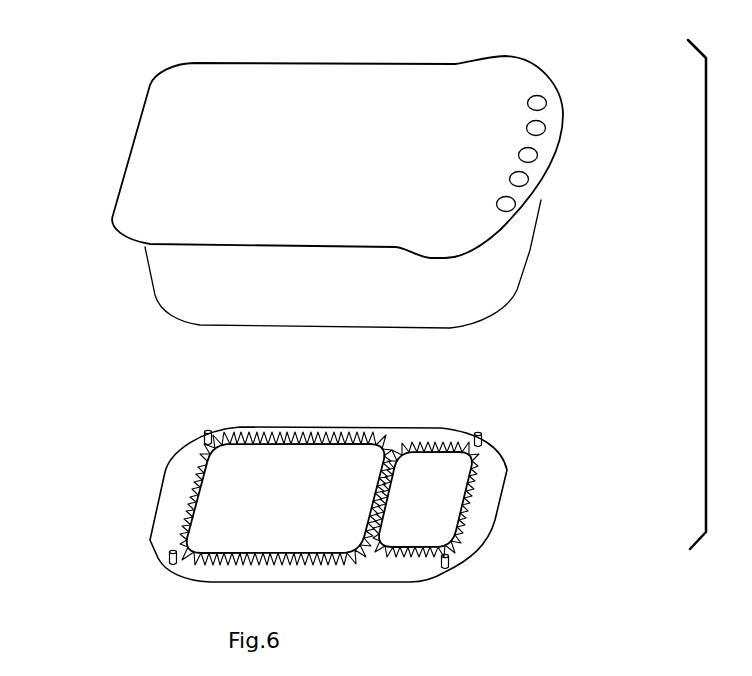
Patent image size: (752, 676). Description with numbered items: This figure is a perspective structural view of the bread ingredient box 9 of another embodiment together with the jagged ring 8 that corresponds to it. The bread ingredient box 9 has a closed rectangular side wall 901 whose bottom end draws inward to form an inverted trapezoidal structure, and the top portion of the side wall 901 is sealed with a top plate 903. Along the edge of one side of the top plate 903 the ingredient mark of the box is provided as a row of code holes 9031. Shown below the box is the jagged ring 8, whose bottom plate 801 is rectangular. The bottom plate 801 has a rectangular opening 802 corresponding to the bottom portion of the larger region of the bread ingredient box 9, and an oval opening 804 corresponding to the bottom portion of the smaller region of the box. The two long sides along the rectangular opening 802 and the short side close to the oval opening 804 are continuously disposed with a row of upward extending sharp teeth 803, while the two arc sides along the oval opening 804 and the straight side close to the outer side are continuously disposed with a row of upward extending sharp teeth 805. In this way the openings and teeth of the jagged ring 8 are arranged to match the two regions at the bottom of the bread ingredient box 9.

The bread ingredient box 9 is at (107, 74).
The side wall 901 is at (531, 253).
The top plate 903 is at (337, 82).
The code holes 9031 is at (538, 102).
The jagged ring 8 is at (131, 434).
The bottom plate 801 is at (165, 516).
The rectangular opening 802 is at (254, 477).
The sharp teeth 803 is at (343, 433).
The oval opening 804 is at (429, 490).
The sharp teeth 805 is at (467, 510).